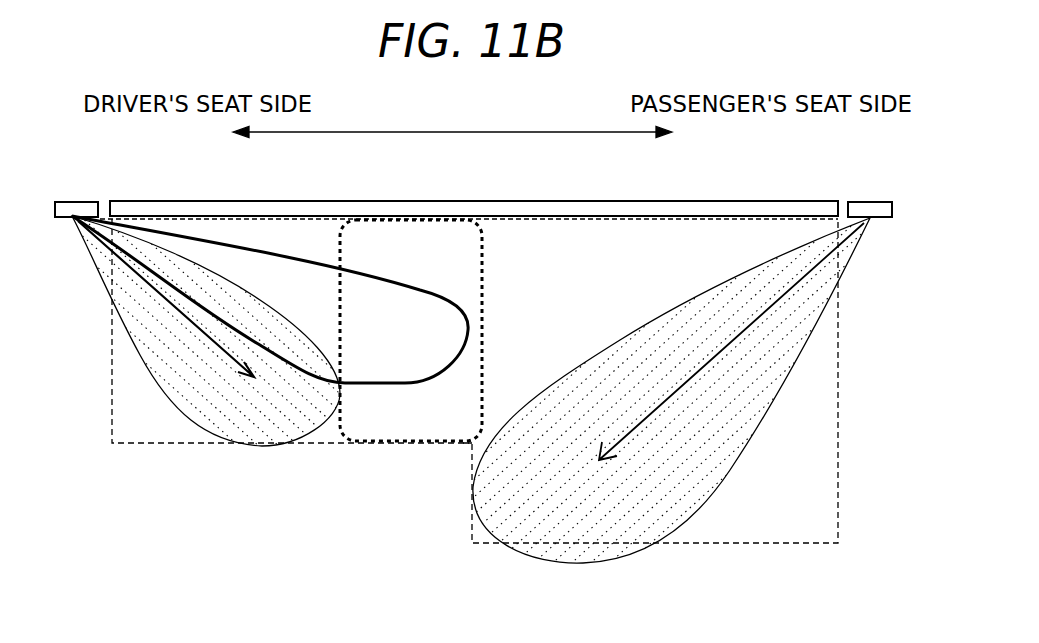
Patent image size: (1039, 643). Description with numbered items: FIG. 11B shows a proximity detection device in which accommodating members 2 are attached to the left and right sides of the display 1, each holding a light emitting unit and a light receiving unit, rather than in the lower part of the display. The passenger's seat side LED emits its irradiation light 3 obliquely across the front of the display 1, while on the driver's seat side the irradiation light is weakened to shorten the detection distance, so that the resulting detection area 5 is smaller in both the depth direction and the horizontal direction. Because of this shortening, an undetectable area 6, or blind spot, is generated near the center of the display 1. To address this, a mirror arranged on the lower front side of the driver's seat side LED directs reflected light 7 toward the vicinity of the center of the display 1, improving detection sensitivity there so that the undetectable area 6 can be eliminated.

The display 1 is at (492, 200).
The accommodating member 2 is at (78, 201).
The irradiation light 3 is at (598, 565).
The detection area 5 is at (205, 444).
The undetectable area (blind spot) 6 is at (483, 247).
The reflected light 7 is at (468, 330).